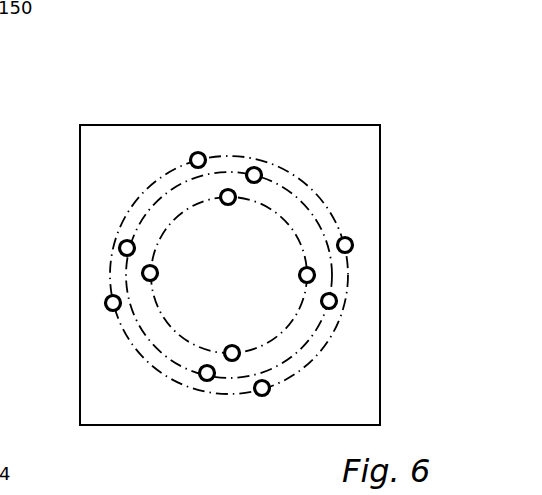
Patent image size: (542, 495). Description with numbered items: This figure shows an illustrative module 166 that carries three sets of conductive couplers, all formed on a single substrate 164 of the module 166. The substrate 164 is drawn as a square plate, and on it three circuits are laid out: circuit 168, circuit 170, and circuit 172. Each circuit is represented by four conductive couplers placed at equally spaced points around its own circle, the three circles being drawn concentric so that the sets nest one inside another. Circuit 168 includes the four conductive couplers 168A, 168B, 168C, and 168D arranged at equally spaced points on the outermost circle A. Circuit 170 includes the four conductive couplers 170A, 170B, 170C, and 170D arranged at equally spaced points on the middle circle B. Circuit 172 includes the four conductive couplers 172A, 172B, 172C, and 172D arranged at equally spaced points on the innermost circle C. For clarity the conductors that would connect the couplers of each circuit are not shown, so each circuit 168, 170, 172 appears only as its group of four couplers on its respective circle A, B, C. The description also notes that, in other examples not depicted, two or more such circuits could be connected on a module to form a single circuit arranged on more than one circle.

The substrate 164 is at (132, 161).
The module 166 is at (412, 175).
The circuit 168 is at (228, 256).
The circuit 170 is at (228, 262).
The circuit 172 is at (228, 278).
The conductive coupler 168A is at (105, 302).
The conductive coupler 168B is at (198, 152).
The conductive coupler 168C is at (354, 245).
The conductive coupler 168D is at (267, 396).
The conductive coupler 170A is at (119, 248).
The conductive coupler 170B is at (254, 167).
The conductive coupler 170C is at (338, 301).
The conductive coupler 170D is at (205, 382).
The conductive coupler 172A is at (142, 273).
The conductive coupler 172B is at (228, 188).
The conductive coupler 172C is at (316, 274).
The conductive coupler 172D is at (232, 362).
The circle A is at (132, 336).
The circle B is at (142, 335).
The circle C is at (178, 331).